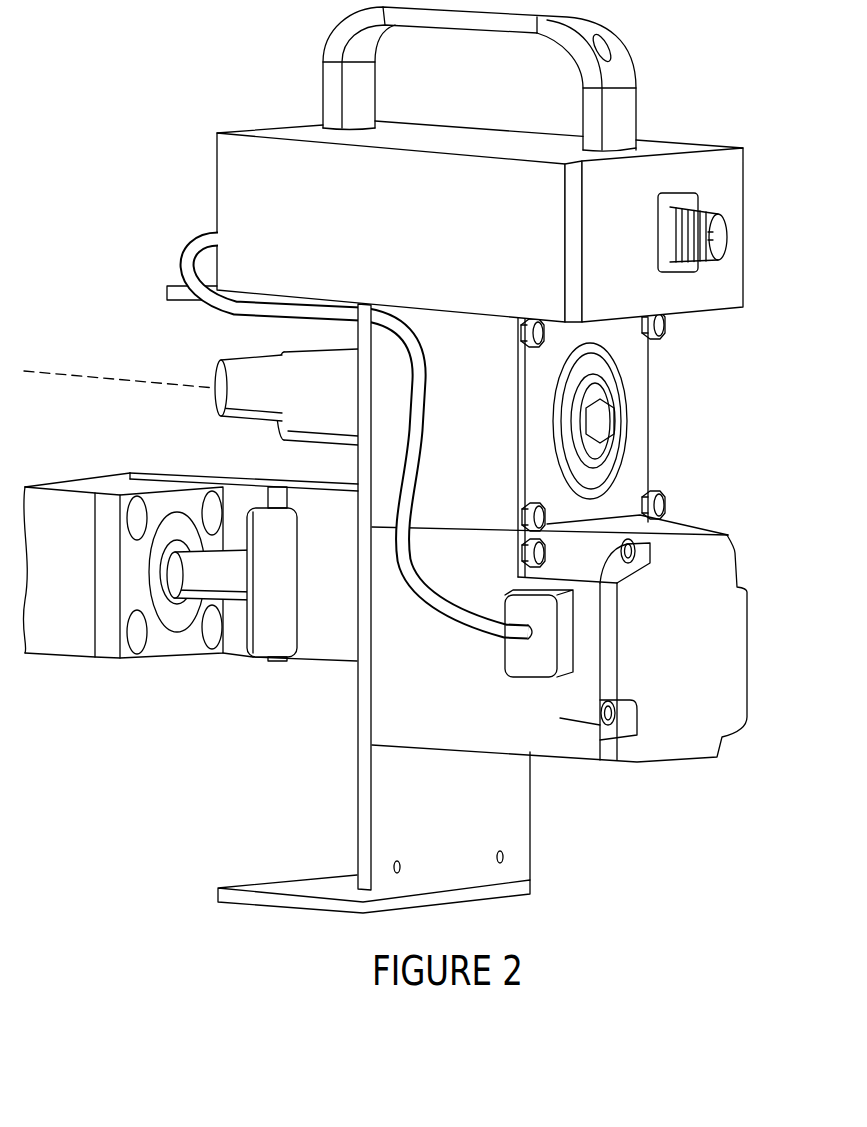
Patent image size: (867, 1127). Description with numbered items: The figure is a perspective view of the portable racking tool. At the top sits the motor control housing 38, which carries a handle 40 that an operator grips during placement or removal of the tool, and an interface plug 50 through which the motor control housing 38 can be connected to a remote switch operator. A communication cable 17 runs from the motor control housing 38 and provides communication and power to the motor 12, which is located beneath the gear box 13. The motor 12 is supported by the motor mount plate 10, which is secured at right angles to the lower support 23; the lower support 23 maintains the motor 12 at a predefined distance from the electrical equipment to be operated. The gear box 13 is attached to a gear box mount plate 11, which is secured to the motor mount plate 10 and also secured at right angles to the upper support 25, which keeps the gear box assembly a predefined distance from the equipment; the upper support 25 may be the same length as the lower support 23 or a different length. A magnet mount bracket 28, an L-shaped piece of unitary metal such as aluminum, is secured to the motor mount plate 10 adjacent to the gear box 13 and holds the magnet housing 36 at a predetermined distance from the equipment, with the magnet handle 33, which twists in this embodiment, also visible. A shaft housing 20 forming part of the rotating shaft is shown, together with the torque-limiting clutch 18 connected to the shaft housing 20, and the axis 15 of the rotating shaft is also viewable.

The motor mount plate 10 is at (505, 830).
The gear box mount plate 11 is at (372, 312).
The motor 12 is at (720, 612).
The gear box 13 is at (632, 375).
The axis 15 is at (117, 381).
The communication cable 17 is at (192, 252).
The torque-limiting clutch 18 is at (300, 365).
The shaft housing 20 is at (235, 375).
The lower support 23 is at (303, 890).
The upper support 25 is at (331, 422).
The magnet mount bracket 28 is at (355, 655).
The magnet handle 33 is at (288, 583).
The magnet housing 36 is at (65, 622).
The motor control housing 38 is at (232, 178).
The handle 40 is at (623, 108).
The interface plug 50 is at (722, 228).